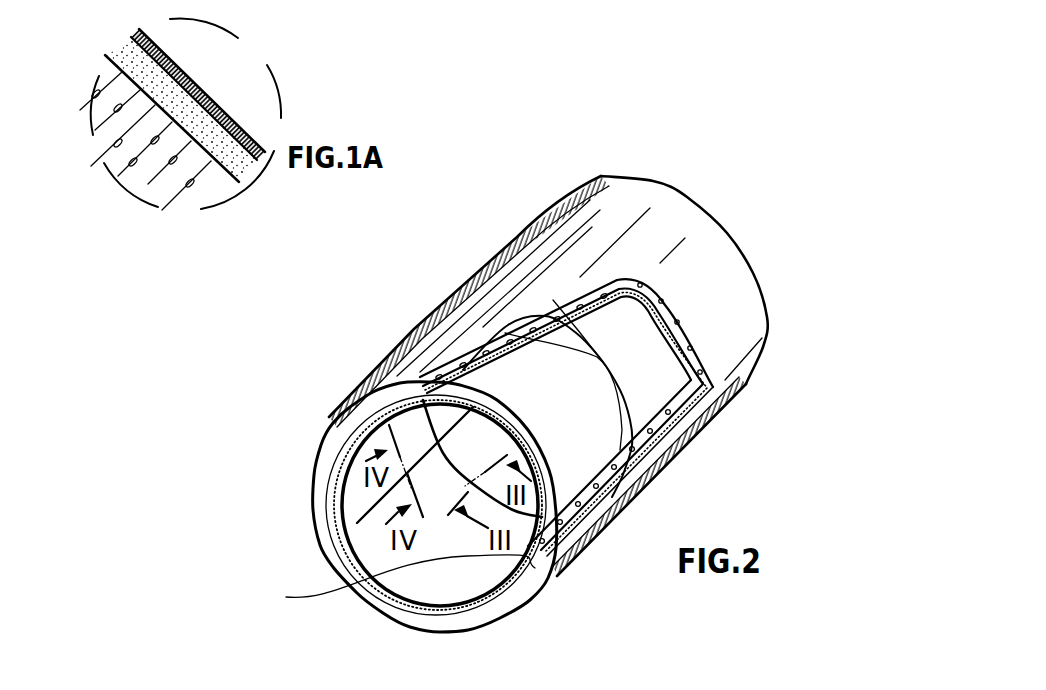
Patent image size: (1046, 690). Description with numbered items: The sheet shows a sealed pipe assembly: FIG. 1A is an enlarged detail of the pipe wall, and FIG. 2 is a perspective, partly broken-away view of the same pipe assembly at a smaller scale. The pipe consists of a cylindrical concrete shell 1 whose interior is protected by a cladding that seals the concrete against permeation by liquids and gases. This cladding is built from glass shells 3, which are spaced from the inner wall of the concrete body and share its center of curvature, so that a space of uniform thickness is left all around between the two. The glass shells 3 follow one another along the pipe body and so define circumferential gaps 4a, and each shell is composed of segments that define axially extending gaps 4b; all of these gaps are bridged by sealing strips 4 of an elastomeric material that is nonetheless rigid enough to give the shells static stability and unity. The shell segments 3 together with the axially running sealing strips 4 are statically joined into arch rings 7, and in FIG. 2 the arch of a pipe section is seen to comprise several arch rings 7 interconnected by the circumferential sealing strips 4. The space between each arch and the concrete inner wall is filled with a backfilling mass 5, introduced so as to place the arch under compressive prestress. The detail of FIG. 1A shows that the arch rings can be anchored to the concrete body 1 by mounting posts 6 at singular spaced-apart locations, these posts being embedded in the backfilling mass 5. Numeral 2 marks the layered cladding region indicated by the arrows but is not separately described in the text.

In FIG. 1A, the concrete shell 1 is at (113, 167).
In FIG. 2, the concrete shell 1 is at (640, 191).
In FIG. 1A, the membrane layer 2 is at (259, 92).
In FIG. 2, the membrane layer 2 is at (682, 327).
In FIG. 1A, the glass shells 3 is at (107, 64).
In FIG. 2, the glass shells 3 is at (318, 509).
In FIG. 2, the sealing strips 4 is at (467, 362).
In FIG. 2, the circumferential gaps 4a is at (623, 373).
In FIG. 2, the axially extending gaps 4b is at (462, 362).
In FIG. 1A, the backfilling mass 5 is at (140, 194).
In FIG. 2, the backfilling mass 5 is at (341, 424).
In FIG. 1A, the mounting posts 6 is at (176, 112).
In FIG. 2, the arch rings 7 is at (595, 430).